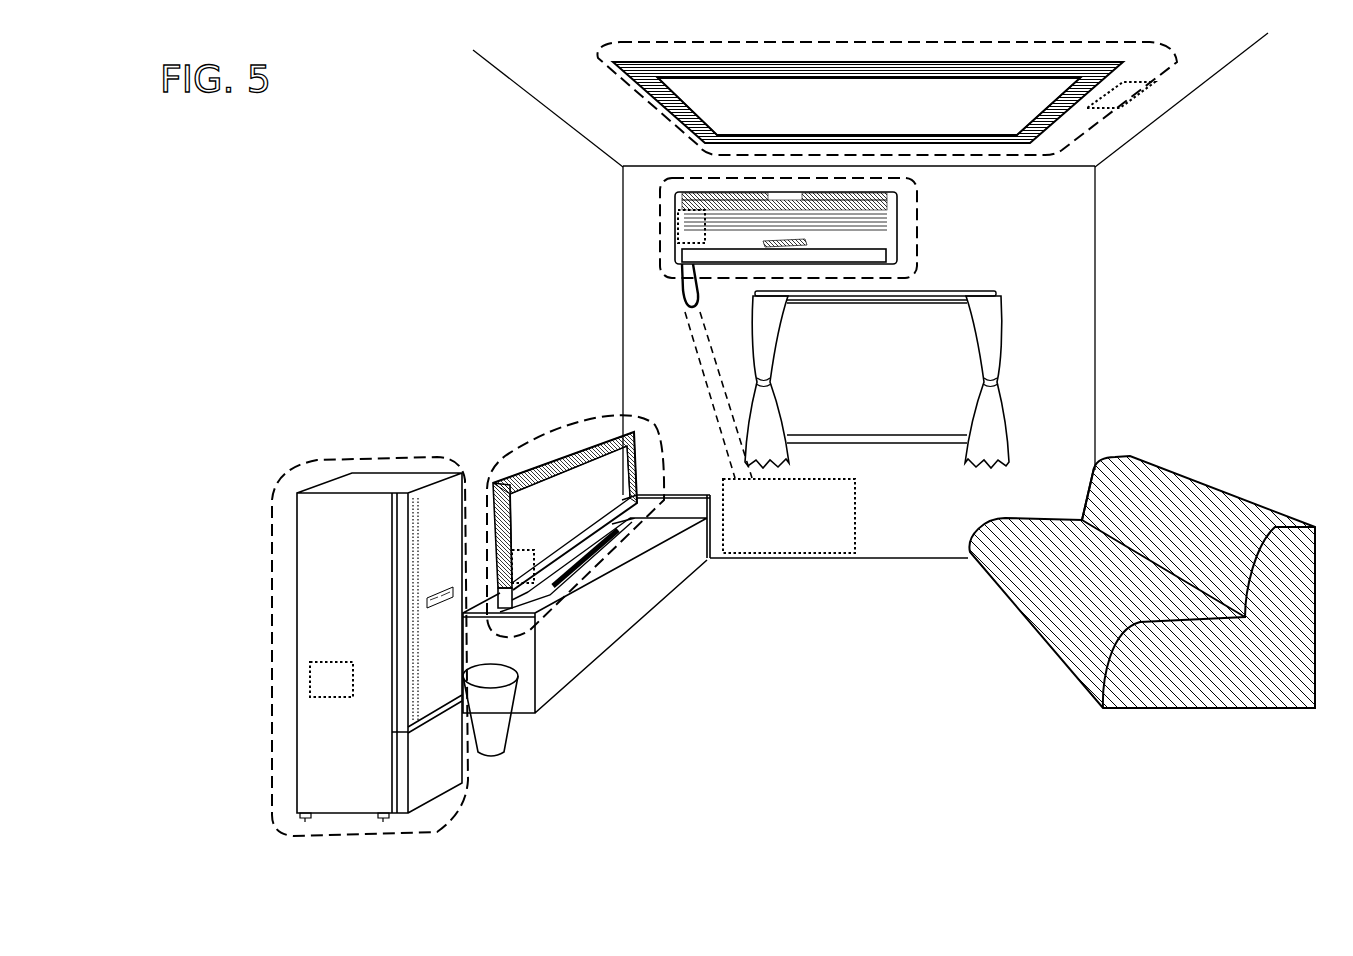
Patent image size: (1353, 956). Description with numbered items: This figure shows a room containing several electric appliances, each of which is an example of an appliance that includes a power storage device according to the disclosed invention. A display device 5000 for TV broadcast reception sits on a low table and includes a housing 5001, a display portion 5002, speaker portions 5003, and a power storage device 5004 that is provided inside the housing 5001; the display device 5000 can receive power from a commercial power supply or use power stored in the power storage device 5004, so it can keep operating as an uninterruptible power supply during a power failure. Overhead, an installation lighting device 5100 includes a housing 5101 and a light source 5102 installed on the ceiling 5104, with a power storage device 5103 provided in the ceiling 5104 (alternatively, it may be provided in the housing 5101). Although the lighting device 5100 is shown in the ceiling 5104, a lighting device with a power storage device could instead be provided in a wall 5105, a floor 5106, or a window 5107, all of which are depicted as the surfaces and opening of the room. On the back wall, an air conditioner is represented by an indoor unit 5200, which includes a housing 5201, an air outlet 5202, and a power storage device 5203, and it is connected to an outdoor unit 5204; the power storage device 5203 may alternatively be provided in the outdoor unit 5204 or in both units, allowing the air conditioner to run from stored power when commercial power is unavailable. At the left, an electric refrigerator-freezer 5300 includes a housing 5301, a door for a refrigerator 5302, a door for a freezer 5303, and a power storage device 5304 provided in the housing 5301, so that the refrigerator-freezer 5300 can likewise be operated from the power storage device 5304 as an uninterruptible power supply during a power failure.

The display device 5000 is at (525, 438).
The housing 5001 is at (573, 453).
The display portion 5002 is at (615, 452).
The speaker portions 5003 is at (632, 445).
The power storage device 5004 is at (527, 550).
The installation lighting device 5100 is at (613, 87).
The housing 5101 is at (660, 100).
The light source 5102 is at (738, 123).
The power storage device 5103 is at (1137, 95).
The ceiling 5104 is at (566, 77).
The wall 5105 is at (1168, 195).
The floor 5106 is at (923, 610).
The window 5107 is at (948, 420).
The indoor unit 5200 is at (660, 200).
The housing 5201 is at (677, 219).
The air outlet 5202 is at (693, 257).
The power storage device 5203 is at (678, 242).
The outdoor unit 5204 is at (779, 510).
The electric refrigerator-freezer 5300 is at (270, 518).
The housing 5301 is at (310, 573).
The door for a refrigerator 5302 is at (437, 648).
The door for a freezer 5303 is at (437, 770).
The power storage device 5304 is at (310, 680).